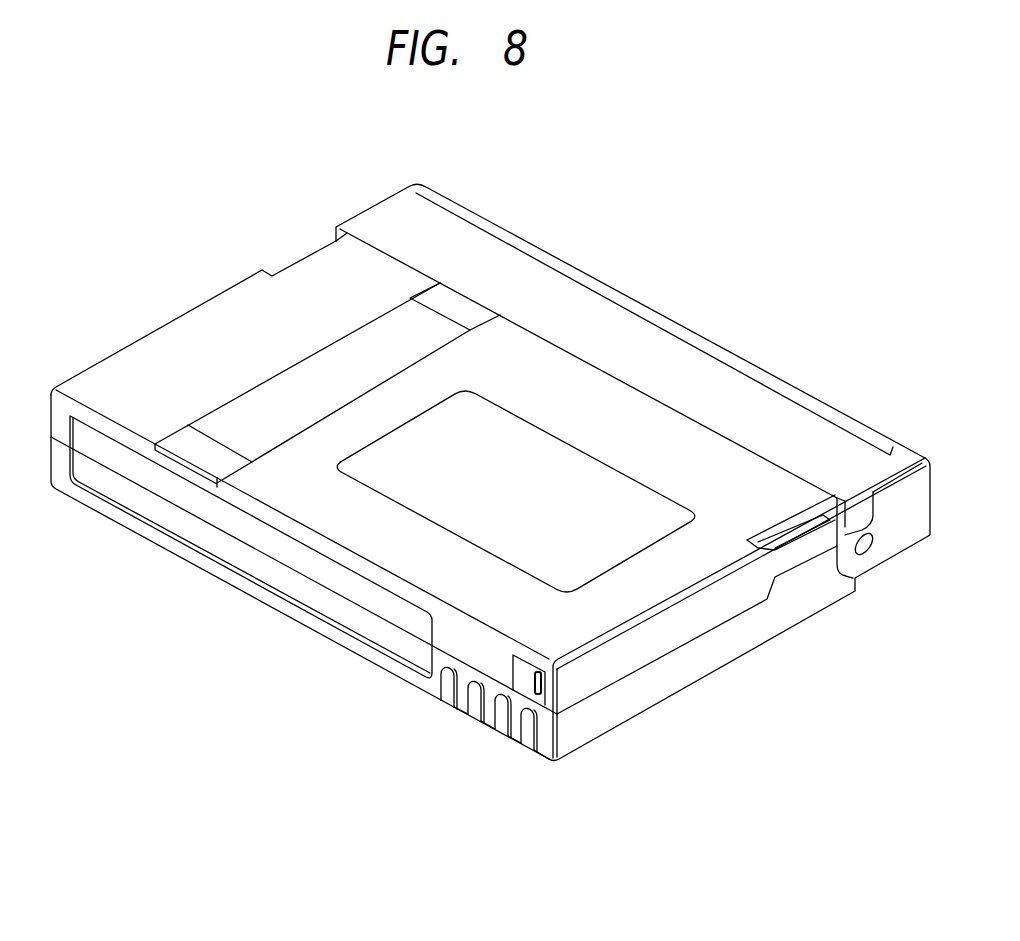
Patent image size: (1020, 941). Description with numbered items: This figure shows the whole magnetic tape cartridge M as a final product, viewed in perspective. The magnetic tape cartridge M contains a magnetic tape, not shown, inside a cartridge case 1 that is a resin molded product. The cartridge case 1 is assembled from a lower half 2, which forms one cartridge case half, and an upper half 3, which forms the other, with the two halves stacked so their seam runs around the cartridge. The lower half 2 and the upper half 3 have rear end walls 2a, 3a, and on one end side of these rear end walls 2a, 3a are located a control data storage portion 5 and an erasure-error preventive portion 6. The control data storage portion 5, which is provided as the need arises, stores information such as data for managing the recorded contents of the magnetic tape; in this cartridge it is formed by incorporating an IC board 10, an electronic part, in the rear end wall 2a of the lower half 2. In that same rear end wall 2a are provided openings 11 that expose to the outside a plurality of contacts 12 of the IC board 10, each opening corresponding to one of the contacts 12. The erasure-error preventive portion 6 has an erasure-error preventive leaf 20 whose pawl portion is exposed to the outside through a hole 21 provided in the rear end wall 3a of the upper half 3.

The cartridge case 1 is at (820, 623).
The lower half 2 is at (682, 682).
The rear end wall 2a is at (388, 667).
The upper half 3 is at (713, 615).
The rear end wall 3a is at (463, 640).
The control data storage portion 5 is at (460, 736).
The erasure-error preventive portion 6 is at (534, 640).
The IC board 10 is at (530, 758).
The openings 11 is at (440, 696).
The contacts 12 is at (509, 728).
The erasure-error preventive leaf 20 is at (523, 672).
The hole 21 is at (541, 672).
The magnetic tape cartridge M is at (824, 380).